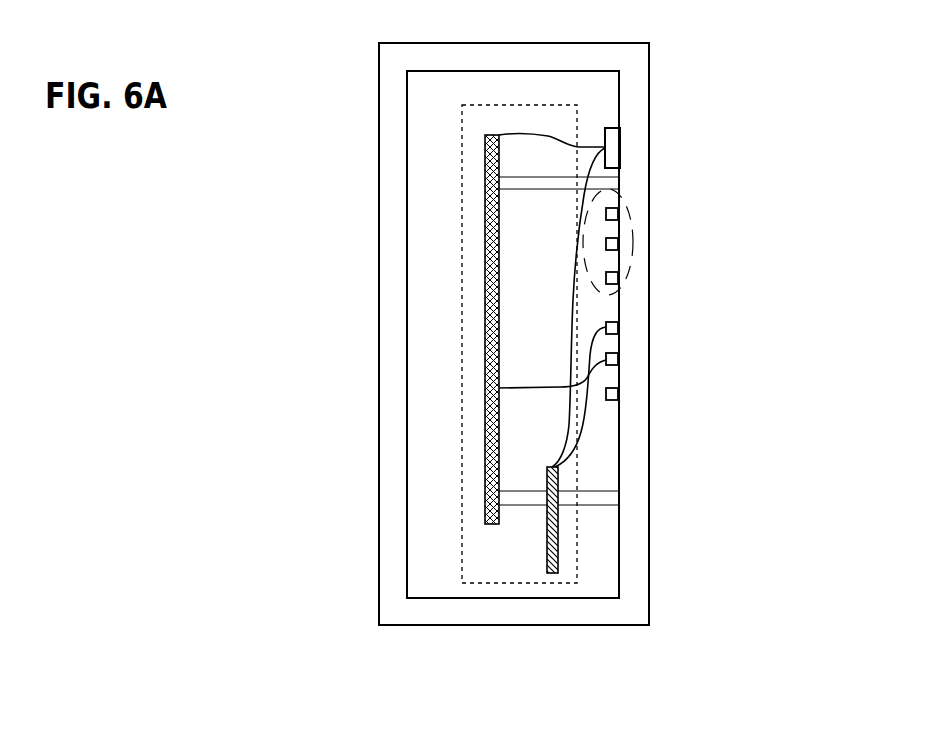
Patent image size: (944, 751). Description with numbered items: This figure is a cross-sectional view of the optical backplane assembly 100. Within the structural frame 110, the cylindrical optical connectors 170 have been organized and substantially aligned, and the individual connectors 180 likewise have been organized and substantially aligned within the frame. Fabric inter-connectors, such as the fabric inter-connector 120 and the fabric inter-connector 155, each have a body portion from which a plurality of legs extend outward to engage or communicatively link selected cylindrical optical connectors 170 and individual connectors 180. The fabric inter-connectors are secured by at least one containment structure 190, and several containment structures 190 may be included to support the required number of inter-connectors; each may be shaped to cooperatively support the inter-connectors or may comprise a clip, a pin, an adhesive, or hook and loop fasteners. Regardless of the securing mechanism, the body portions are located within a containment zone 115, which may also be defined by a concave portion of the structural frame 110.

The optical backplane assembly 100 is at (746, 79).
The structural frame 110 is at (649, 187).
The containment zone 115 is at (462, 292).
The fabric inter-connector 120 is at (558, 547).
The fabric inter-connector 155 is at (499, 382).
The cylindrical optical connectors 170 is at (620, 147).
The individual connectors 180 is at (632, 260).
The containment structure 190 is at (517, 191).